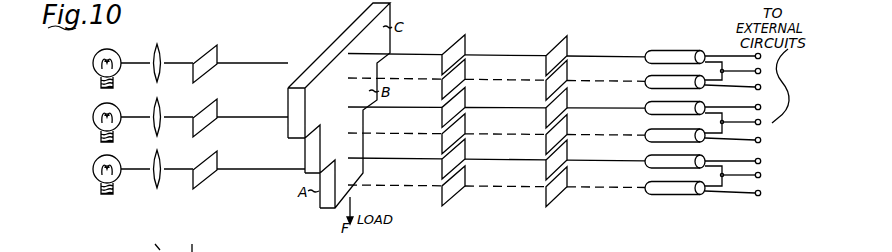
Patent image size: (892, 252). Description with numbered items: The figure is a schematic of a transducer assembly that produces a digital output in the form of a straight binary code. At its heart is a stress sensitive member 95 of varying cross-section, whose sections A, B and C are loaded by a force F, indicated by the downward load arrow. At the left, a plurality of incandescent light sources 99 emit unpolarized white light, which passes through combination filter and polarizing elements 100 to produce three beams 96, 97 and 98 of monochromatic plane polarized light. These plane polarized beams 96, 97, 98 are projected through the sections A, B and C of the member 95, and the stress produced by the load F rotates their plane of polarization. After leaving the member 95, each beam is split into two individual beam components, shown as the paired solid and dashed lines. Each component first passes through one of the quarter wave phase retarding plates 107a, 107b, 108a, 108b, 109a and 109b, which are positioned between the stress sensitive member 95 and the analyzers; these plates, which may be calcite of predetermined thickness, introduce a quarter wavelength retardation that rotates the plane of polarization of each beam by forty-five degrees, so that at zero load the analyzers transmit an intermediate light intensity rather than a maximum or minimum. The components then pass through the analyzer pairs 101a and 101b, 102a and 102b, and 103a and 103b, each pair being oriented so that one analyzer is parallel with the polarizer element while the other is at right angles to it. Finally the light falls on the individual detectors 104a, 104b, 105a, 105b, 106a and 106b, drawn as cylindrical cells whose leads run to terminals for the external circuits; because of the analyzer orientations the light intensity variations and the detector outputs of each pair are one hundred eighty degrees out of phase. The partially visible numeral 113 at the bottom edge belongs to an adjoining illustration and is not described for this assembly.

The stress sensitive member 95 is at (338, 45).
The plane polarized light beam 96 is at (258, 169).
The plane polarized light beam 97 is at (268, 115).
The plane polarized light beam 98 is at (264, 62).
The incandescent light source 99 is at (97, 112).
The combination filter and polarizing element 100 is at (226, 38).
The analyzer 101a is at (553, 197).
The analyzer 101b is at (545, 172).
The analyzer 102a is at (568, 124).
The analyzer 102b is at (545, 120).
The analyzer 103a is at (568, 70).
The analyzer 103b is at (569, 41).
The detector 104a is at (687, 193).
The detector 104b is at (653, 167).
The detector 105a is at (690, 142).
The detector 105b is at (651, 107).
The detector 106a is at (690, 88).
The detector 106b is at (672, 53).
The quarter wave phase retarding plate 107a is at (467, 192).
The quarter wave phase retarding plate 107b is at (466, 150).
The quarter wave phase retarding plate 108a is at (442, 148).
The quarter wave phase retarding plate 108b is at (466, 97).
The quarter wave phase retarding plate 109a is at (442, 92).
The quarter wave phase retarding plate 109b is at (465, 45).
The element of adjacent figure 113 is at (282, 250).